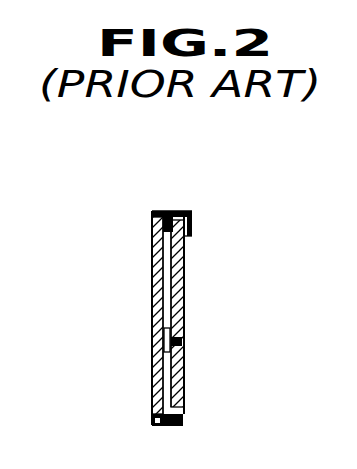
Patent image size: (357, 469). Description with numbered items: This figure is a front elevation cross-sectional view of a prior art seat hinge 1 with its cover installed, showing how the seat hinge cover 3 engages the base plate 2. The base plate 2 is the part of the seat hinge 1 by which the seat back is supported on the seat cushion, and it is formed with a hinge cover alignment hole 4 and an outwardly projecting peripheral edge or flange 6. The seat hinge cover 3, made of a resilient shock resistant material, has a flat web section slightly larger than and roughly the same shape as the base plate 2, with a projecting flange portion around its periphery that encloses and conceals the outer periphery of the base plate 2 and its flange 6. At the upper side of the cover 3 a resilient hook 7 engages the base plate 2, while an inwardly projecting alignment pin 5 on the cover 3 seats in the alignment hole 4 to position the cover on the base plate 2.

The seat hinge 1 is at (203, 235).
The base plate 2 is at (186, 272).
The seat hinge cover 3 is at (155, 288).
The hinge cover alignment hole 4 is at (182, 341).
The alignment pin 5 is at (176, 350).
The peripheral edge or flange 6 is at (162, 212).
The resilient hook 7 is at (187, 236).